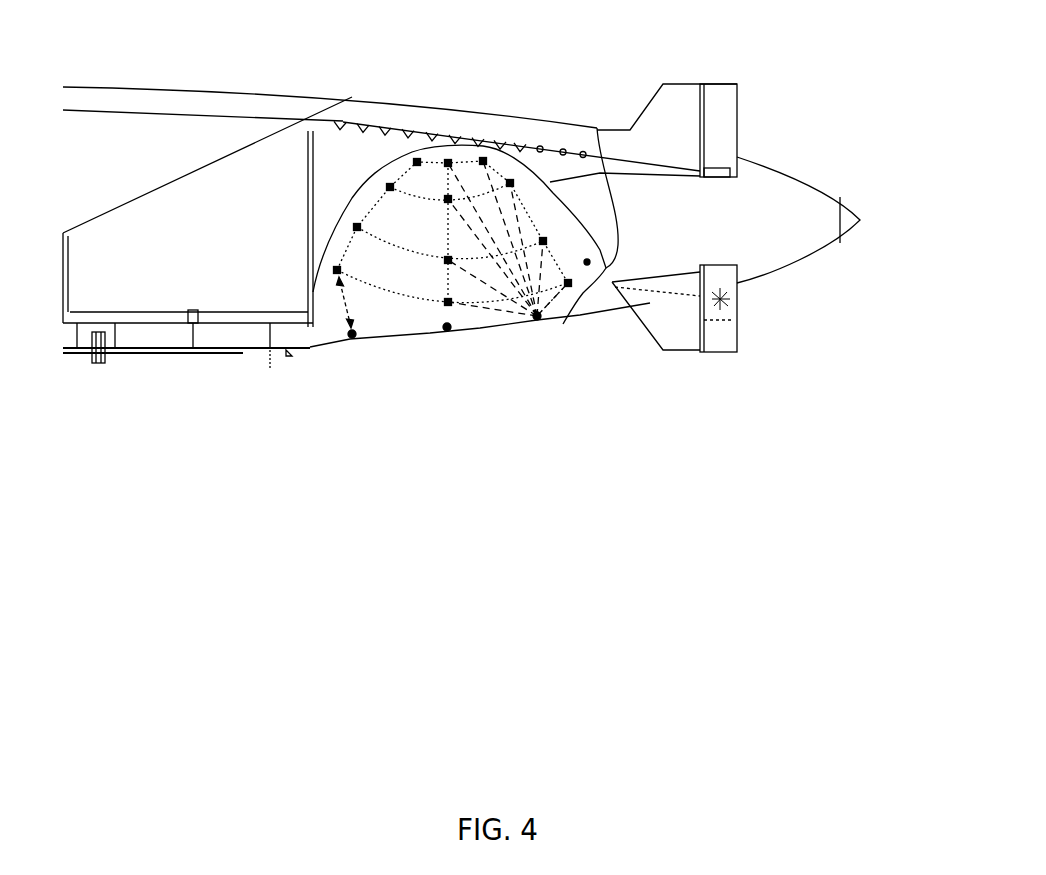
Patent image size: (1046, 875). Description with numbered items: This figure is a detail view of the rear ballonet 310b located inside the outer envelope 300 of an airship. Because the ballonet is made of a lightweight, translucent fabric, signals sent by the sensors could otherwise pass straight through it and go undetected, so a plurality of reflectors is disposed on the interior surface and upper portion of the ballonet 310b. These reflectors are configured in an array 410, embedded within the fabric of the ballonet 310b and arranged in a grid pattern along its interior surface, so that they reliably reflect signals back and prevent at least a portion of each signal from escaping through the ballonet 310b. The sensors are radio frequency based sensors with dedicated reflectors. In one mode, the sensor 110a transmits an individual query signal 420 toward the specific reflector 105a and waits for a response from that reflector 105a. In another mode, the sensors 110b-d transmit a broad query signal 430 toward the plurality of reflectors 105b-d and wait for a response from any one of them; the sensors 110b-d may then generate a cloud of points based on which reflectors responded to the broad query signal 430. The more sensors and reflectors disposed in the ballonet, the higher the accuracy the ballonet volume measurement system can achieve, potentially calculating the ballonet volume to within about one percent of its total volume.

The outer envelope 300 is at (128, 83).
The reflector 105a is at (337, 267).
The reflectors 105b-d is at (405, 120).
The sensor 110a is at (350, 340).
The sensors 110b-d is at (563, 328).
The rear ballonet 310b is at (589, 266).
The array 410 is at (402, 169).
The individual query signal 420 is at (345, 307).
The broad query signal 430 is at (558, 302).